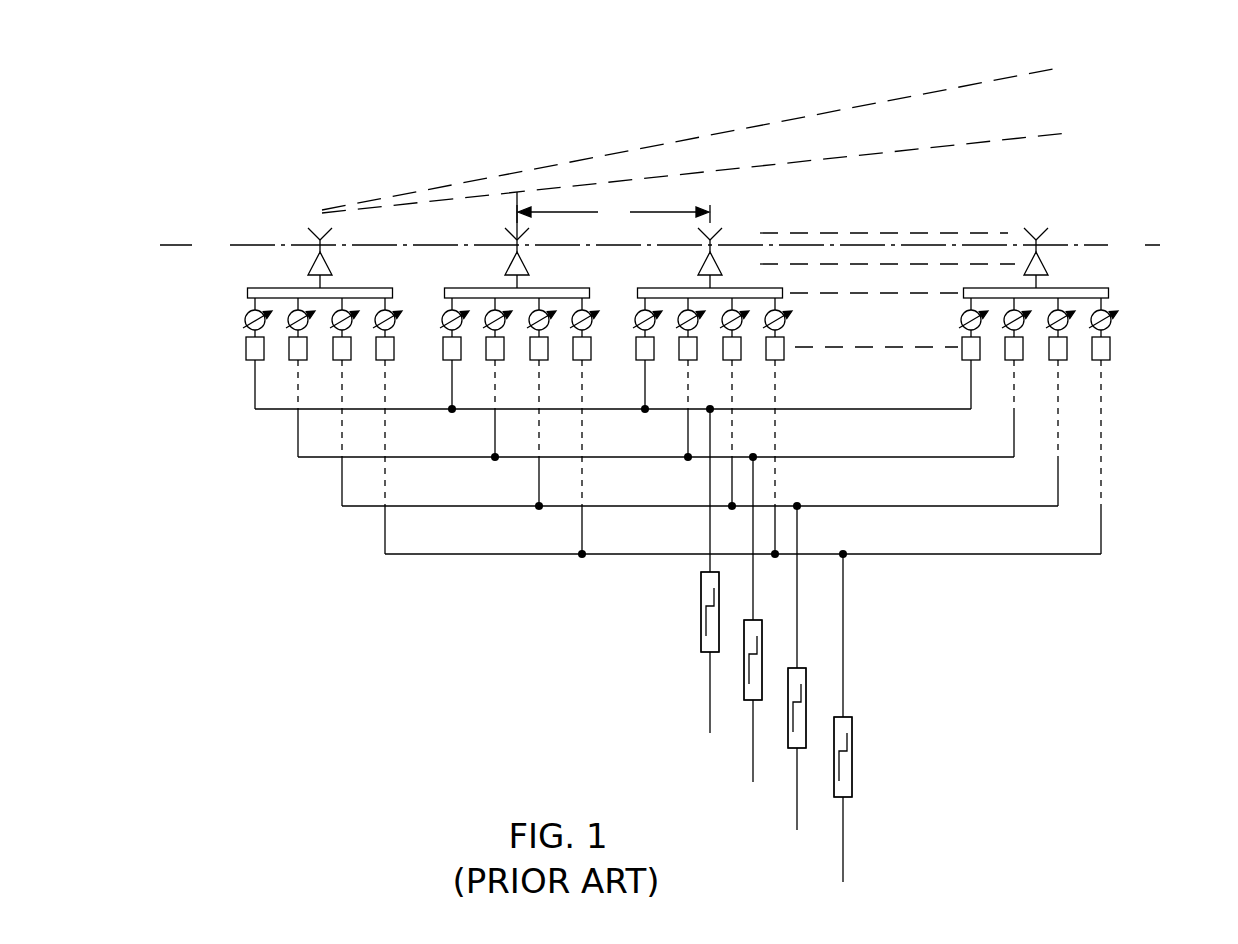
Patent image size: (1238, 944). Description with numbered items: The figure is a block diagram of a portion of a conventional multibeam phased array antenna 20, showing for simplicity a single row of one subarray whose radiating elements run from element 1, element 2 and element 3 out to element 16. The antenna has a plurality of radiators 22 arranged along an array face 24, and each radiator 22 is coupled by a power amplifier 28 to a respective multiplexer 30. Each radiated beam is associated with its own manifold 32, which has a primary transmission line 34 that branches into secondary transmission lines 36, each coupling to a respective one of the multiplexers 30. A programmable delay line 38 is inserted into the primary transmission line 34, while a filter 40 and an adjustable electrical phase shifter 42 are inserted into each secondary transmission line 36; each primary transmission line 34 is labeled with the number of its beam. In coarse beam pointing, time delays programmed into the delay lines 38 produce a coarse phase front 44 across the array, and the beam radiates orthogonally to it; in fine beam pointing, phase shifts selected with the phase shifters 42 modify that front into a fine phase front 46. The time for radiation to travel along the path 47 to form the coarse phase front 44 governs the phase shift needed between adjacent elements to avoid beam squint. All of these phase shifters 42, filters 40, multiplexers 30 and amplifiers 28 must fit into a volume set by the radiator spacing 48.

The multibeam phased array antenna 20 is at (1100, 185).
The radiator 22 is at (305, 238).
The array face 24 is at (660, 245).
The power amplifier 28 is at (308, 257).
The multiplexer 30 is at (247, 290).
The adjustable electrical phase shifter 42 is at (245, 318).
The filter 40 is at (245, 348).
The secondary transmission line 36 is at (254, 384).
The manifold 32 is at (260, 408).
The primary transmission line 34 is at (731, 643).
The programmable delay line 38 is at (700, 613).
The coarse phase front 44 is at (694, 173).
The fine phase front 46 is at (690, 139).
The path 47 is at (516, 209).
The radiator spacing 48 is at (613, 212).
The antenna beam # 1 is at (280, 369).
The antenna beam # 2 is at (519, 386).
The antenna beam # 3 is at (712, 386).
The sixteen element row 16 is at (1038, 386).